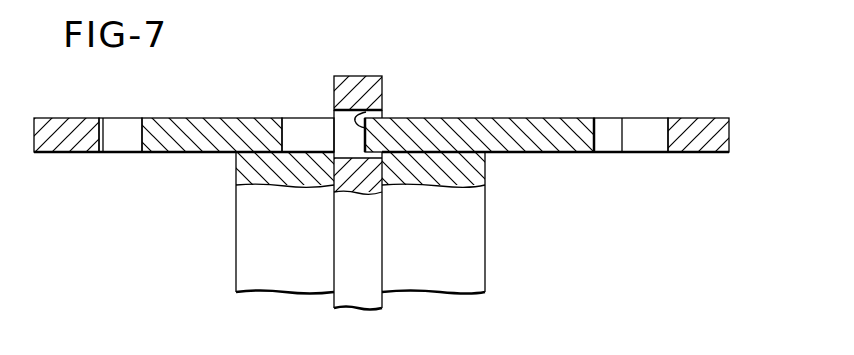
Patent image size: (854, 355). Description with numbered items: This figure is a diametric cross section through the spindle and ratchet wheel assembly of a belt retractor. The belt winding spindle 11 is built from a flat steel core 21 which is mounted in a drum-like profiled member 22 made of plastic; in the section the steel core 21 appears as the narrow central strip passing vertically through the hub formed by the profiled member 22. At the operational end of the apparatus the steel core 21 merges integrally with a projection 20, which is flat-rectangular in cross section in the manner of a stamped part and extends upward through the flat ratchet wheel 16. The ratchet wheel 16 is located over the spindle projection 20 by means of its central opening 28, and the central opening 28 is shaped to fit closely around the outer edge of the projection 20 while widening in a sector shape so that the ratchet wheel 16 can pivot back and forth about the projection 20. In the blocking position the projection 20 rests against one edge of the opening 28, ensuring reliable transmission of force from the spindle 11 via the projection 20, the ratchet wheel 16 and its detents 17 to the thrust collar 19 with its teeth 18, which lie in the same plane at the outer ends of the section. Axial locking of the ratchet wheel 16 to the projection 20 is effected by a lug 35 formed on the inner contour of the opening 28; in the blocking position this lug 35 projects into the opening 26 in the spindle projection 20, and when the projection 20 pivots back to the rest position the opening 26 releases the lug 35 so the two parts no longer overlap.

The belt winding spindle 11 is at (487, 197).
The ratchet wheel 16 is at (473, 122).
The detents 17 is at (115, 125).
The teeth 18 is at (637, 127).
The thrust collar 19 is at (63, 125).
The projection 20 is at (358, 169).
The flat steel core 21 is at (340, 228).
The profiled member 22 is at (475, 240).
The opening 26 is at (338, 125).
The central opening 28 is at (295, 130).
The lug 35 is at (369, 111).